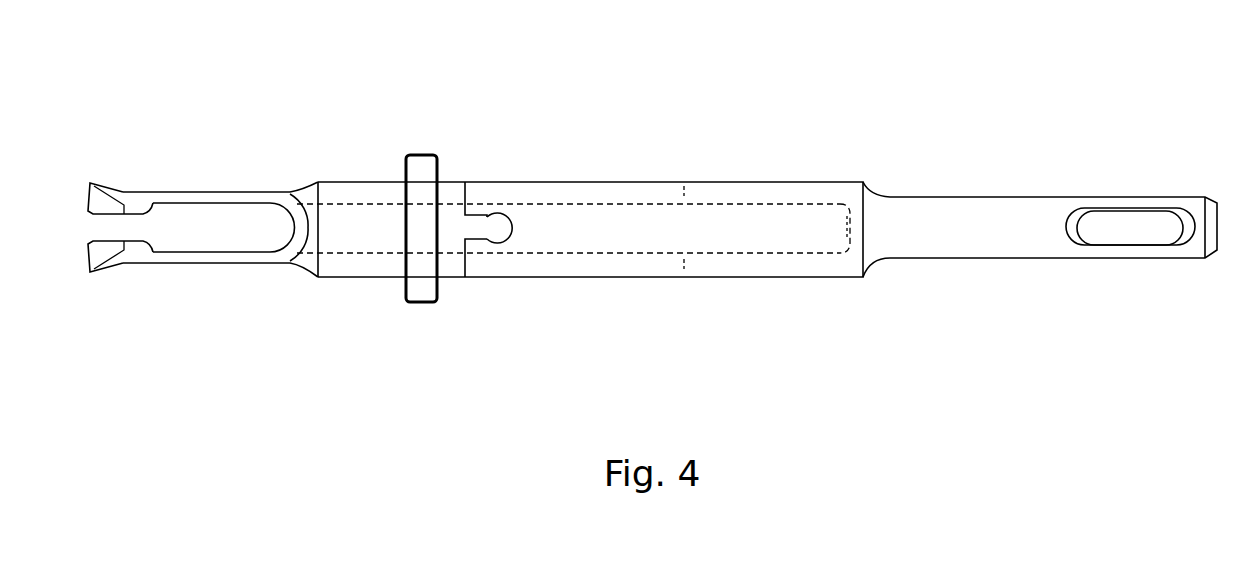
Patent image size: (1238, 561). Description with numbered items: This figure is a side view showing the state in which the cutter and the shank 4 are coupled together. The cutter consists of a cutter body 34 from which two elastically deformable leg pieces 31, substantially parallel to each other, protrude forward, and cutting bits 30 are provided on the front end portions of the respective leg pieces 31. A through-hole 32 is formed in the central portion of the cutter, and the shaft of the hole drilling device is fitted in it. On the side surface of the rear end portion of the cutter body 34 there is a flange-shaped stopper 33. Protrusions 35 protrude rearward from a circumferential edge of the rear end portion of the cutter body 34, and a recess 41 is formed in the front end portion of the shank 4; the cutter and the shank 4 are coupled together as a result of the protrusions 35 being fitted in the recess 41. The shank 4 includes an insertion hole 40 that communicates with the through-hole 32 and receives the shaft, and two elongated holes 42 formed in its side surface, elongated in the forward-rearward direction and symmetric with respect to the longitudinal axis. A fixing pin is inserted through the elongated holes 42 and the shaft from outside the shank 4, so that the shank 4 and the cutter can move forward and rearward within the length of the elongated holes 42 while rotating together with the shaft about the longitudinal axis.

The shank 4 is at (912, 213).
The cutting bits 30 is at (113, 182).
The leg pieces 31 is at (227, 192).
The through-hole 32 is at (363, 243).
The stopper 33 is at (422, 162).
The cutter body 34 is at (355, 194).
The protrusions 35 is at (492, 228).
The insertion hole 40 is at (739, 213).
The recess 41 is at (513, 230).
The elongated holes 42 is at (587, 192).